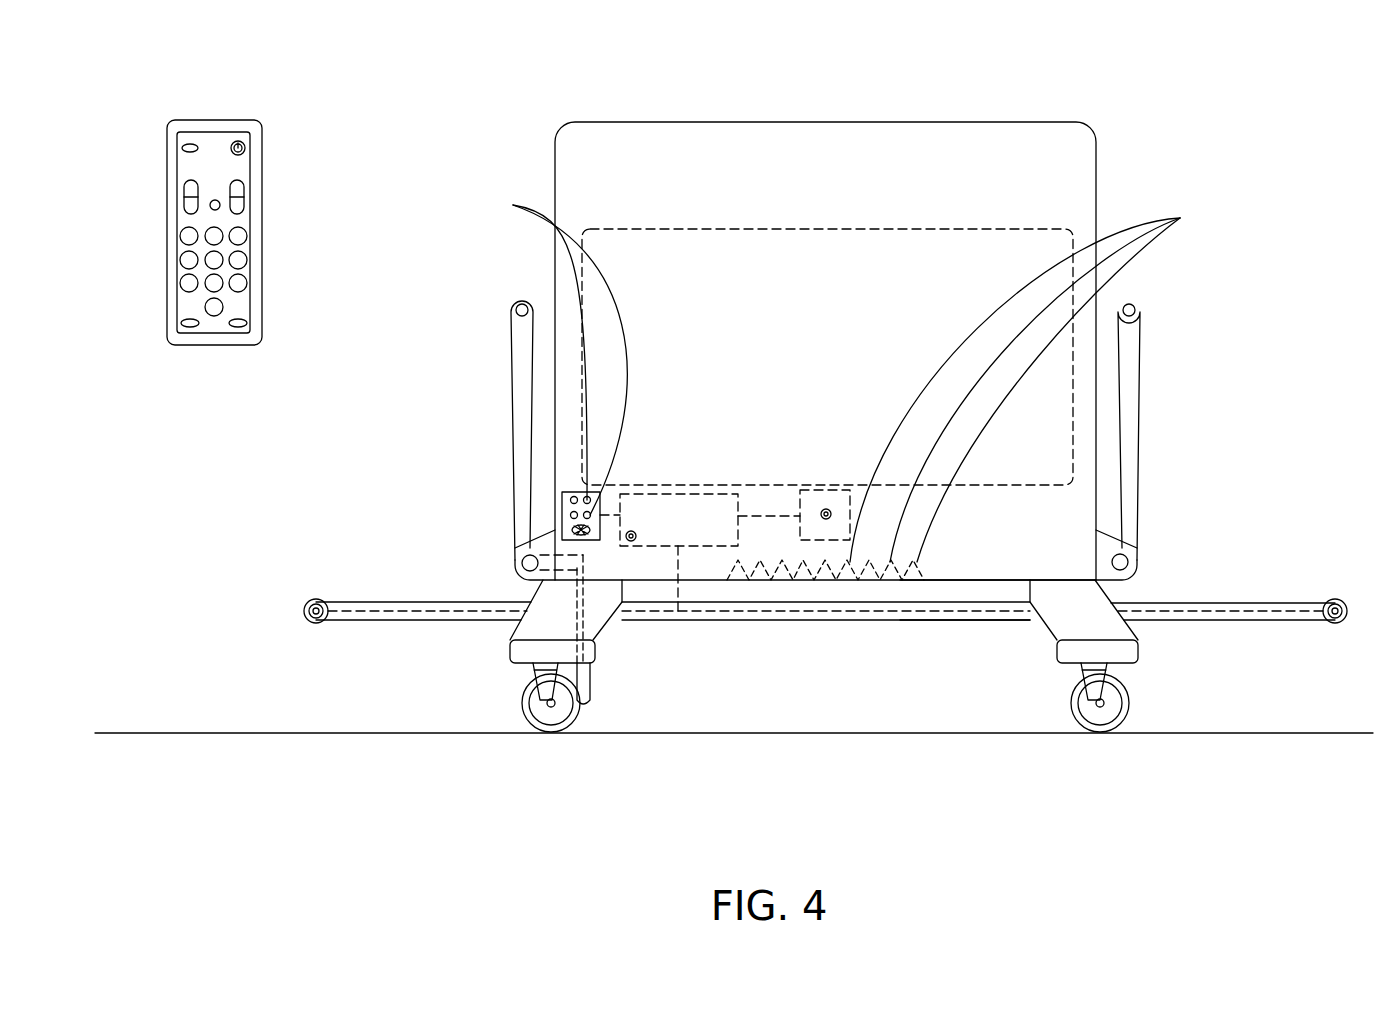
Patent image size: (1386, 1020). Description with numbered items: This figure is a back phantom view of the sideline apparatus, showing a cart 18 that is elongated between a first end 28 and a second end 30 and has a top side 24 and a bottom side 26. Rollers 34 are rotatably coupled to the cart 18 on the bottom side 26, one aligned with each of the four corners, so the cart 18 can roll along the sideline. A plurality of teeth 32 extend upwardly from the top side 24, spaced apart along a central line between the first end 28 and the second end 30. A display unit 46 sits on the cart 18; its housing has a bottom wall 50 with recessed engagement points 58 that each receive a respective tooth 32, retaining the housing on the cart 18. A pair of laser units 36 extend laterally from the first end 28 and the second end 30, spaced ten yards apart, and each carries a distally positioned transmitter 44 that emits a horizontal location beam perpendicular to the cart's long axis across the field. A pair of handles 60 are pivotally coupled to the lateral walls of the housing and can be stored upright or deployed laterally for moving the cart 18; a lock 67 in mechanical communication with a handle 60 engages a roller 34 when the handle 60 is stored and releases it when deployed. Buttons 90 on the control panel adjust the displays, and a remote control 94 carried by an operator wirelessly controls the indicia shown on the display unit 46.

The cart 18 is at (661, 667).
The top side 24 is at (982, 578).
The bottom side 26 is at (968, 620).
The first end 28 is at (1105, 592).
The second end 30 is at (538, 593).
The teeth 32 is at (1038, 381).
The rollers 34 is at (522, 707).
The laser units 36 is at (370, 540).
The transmitter 44 is at (316, 623).
The display unit 46 is at (795, 70).
The bottom wall 50 is at (870, 602).
The engagement points 58 is at (573, 492).
The handles 60 is at (462, 381).
The lock 67 is at (588, 703).
The buttons 90 is at (549, 350).
The remote control 94 is at (214, 120).